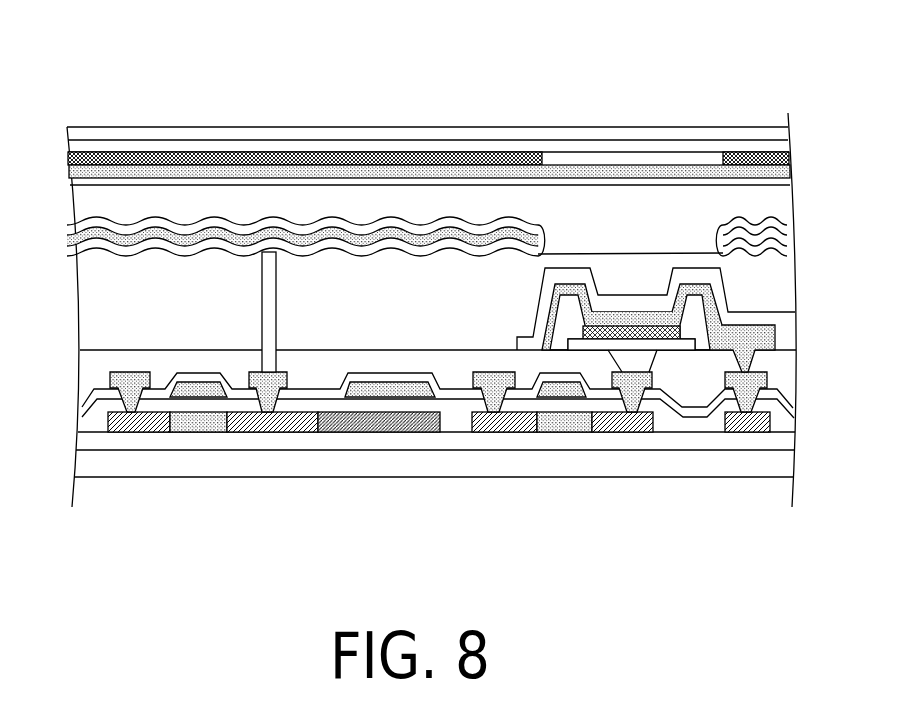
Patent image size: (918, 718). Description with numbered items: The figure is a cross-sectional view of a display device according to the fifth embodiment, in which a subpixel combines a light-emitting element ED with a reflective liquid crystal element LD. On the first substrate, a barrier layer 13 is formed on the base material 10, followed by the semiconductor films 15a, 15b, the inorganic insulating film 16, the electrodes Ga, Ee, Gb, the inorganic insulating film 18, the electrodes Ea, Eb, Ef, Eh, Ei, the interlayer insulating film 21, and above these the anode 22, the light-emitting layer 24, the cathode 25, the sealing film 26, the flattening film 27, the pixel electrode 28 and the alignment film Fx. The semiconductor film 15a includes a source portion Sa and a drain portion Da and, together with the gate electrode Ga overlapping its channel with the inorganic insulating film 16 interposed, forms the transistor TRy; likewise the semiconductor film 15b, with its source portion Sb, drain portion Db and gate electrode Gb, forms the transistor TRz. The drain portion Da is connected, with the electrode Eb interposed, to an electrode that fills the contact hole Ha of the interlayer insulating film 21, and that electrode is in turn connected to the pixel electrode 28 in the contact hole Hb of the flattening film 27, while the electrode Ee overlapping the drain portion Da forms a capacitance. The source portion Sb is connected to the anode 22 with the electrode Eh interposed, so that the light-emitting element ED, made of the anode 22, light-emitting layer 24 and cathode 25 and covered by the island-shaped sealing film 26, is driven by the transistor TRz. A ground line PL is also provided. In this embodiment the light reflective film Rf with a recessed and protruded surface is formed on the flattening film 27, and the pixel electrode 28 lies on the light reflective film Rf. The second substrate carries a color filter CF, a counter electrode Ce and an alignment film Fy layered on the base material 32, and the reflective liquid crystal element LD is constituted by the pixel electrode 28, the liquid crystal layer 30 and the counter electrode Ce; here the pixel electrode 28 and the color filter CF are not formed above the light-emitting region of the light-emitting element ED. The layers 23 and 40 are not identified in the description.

The base material 10 is at (77, 464).
The barrier layer 13 is at (79, 443).
The inorganic insulating film 16 is at (80, 424).
The inorganic insulating film 18 is at (81, 407).
The interlayer insulating film 21 is at (80, 360).
The anode 22 is at (641, 345).
The pixel defining layer 23 is at (568, 302).
The light-emitting layer 24 is at (602, 318).
The cathode 25 is at (618, 333).
The sealing film 26 is at (665, 307).
The flattening film 27 is at (72, 290).
The pixel electrode 28 is at (353, 237).
The liquid crystal layer 30 is at (70, 199).
The base material 32 is at (68, 140).
The cover window 40 is at (68, 127).
The color filter CF is at (68, 157).
The counter electrode Ce is at (66, 170).
The alignment film Fy is at (245, 178).
The alignment film Fx is at (447, 217).
The reflective liquid crystal element LD is at (312, 55).
The light-emitting element ED is at (588, 62).
The light reflective film Rf is at (68, 246).
The electrode Ea is at (132, 378).
The electrode Eb is at (251, 312).
The electrode Ee is at (413, 388).
The electrode Ef is at (503, 372).
The electrode Eh is at (652, 378).
The electrode Ei is at (726, 381).
The contact hole Ha is at (262, 357).
The contact hole Hb is at (263, 292).
The source portion Sa is at (130, 424).
The electrode Ga is at (184, 424).
The drain portion Da is at (272, 424).
The semiconductor film 15a is at (218, 436).
The drain portion Db is at (495, 424).
The electrode Gb is at (548, 424).
The source portion Sb is at (632, 424).
The semiconductor film 15b is at (579, 436).
The ground line PL is at (758, 424).
The transistor TRy is at (213, 476).
The transistor TRz is at (562, 476).